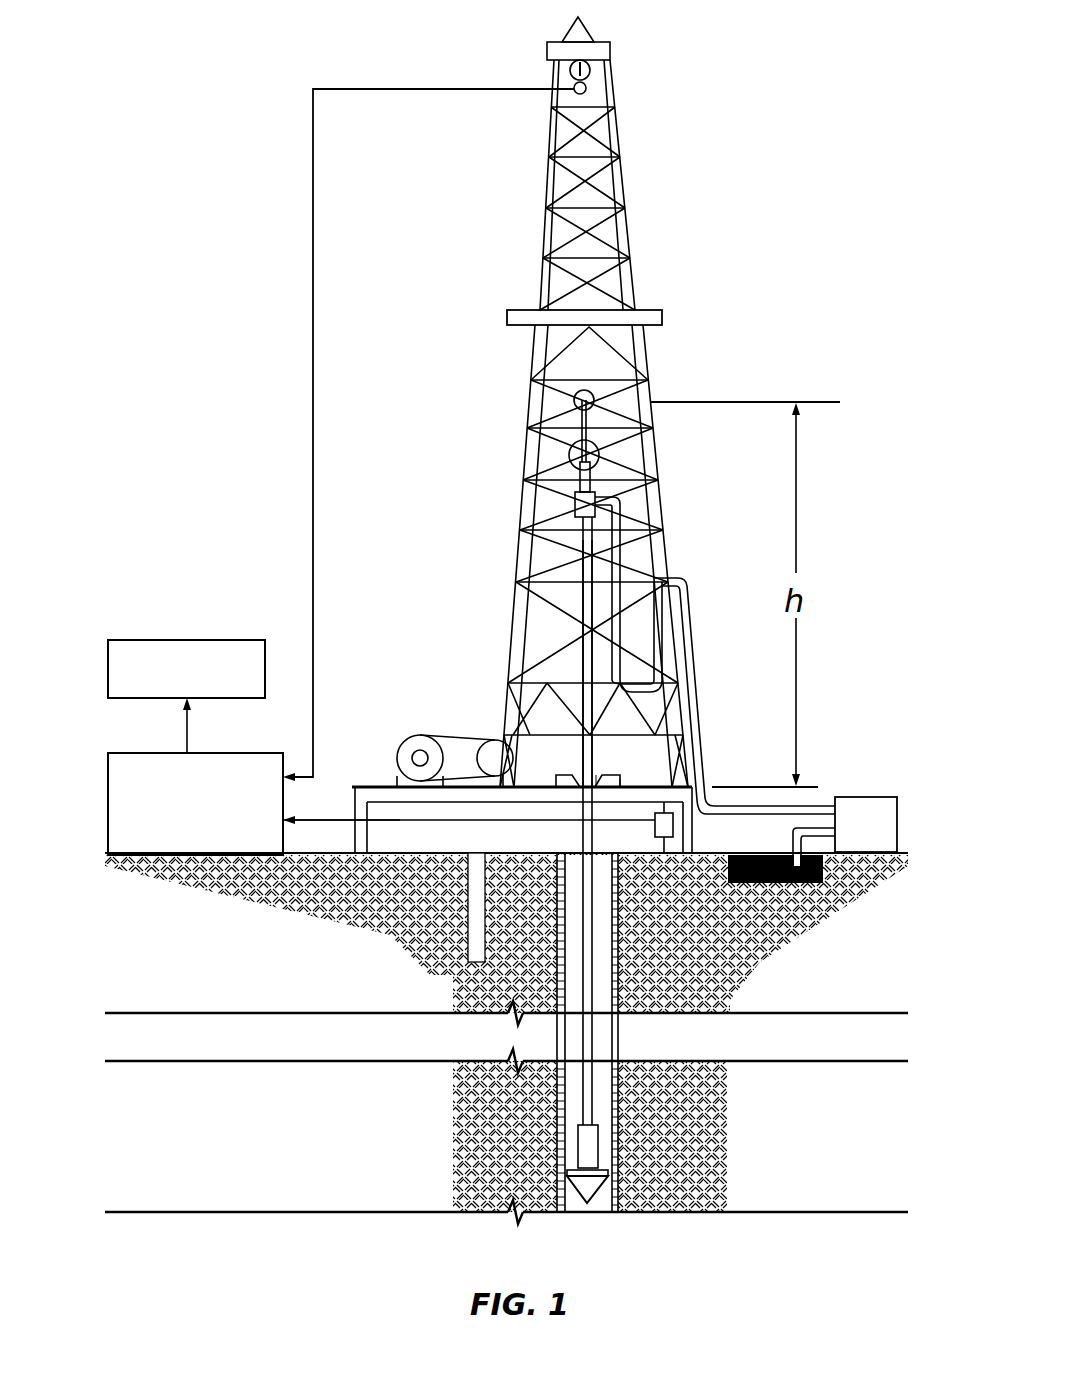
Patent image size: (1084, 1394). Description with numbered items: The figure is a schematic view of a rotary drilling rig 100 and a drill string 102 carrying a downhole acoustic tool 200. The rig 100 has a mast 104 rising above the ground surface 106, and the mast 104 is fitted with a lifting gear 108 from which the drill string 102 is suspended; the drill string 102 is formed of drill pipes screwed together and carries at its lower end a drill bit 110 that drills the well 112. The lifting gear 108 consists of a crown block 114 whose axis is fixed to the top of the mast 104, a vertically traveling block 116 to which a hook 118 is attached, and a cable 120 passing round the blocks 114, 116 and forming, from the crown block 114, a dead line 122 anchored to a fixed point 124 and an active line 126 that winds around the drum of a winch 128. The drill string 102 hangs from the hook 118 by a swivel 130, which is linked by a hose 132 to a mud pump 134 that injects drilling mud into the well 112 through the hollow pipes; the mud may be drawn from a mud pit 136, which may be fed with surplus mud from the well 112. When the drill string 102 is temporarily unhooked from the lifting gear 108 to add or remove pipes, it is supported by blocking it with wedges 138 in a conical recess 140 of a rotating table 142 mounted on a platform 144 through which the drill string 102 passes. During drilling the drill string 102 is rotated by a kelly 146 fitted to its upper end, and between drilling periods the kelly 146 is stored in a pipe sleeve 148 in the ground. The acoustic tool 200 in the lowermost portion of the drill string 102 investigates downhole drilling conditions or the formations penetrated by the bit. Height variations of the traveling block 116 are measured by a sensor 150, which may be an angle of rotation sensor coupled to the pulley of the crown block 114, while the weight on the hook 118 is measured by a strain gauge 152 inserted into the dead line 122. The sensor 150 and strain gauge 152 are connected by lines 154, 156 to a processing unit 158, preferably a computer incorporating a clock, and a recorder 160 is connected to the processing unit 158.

The drilling rig 100 is at (790, 121).
The drill string 102 is at (592, 960).
The mast 104 is at (618, 540).
The ground surface 106 is at (400, 853).
The lifting gear 108 is at (597, 354).
The drill bit 110 is at (683, 1201).
The well 112 is at (604, 1203).
The crown block 114 is at (598, 60).
The traveling block 116 is at (580, 399).
The hook 118 is at (598, 453).
The cable 120 is at (596, 303).
The dead line 122 is at (655, 493).
The fixed point 124 is at (655, 839).
The active line 126 is at (540, 457).
The winch 128 is at (463, 742).
The swivel 130 is at (575, 502).
The hose 132 is at (663, 575).
The mud pump 134 is at (850, 797).
The mud pit 136 is at (805, 885).
The wedges 138 is at (590, 772).
The conical recess 140 is at (608, 775).
The rotating table 142 is at (620, 779).
The platform 144 is at (700, 787).
The kelly 146 is at (588, 607).
The pipe sleeve 148 is at (468, 962).
The sensor 150 is at (592, 86).
The strain gauge 152 is at (668, 823).
The line 154 is at (313, 308).
The line 156 is at (305, 818).
The processing unit 158 is at (158, 753).
The recorder 160 is at (155, 640).
The acoustic tool 200 is at (587, 1070).